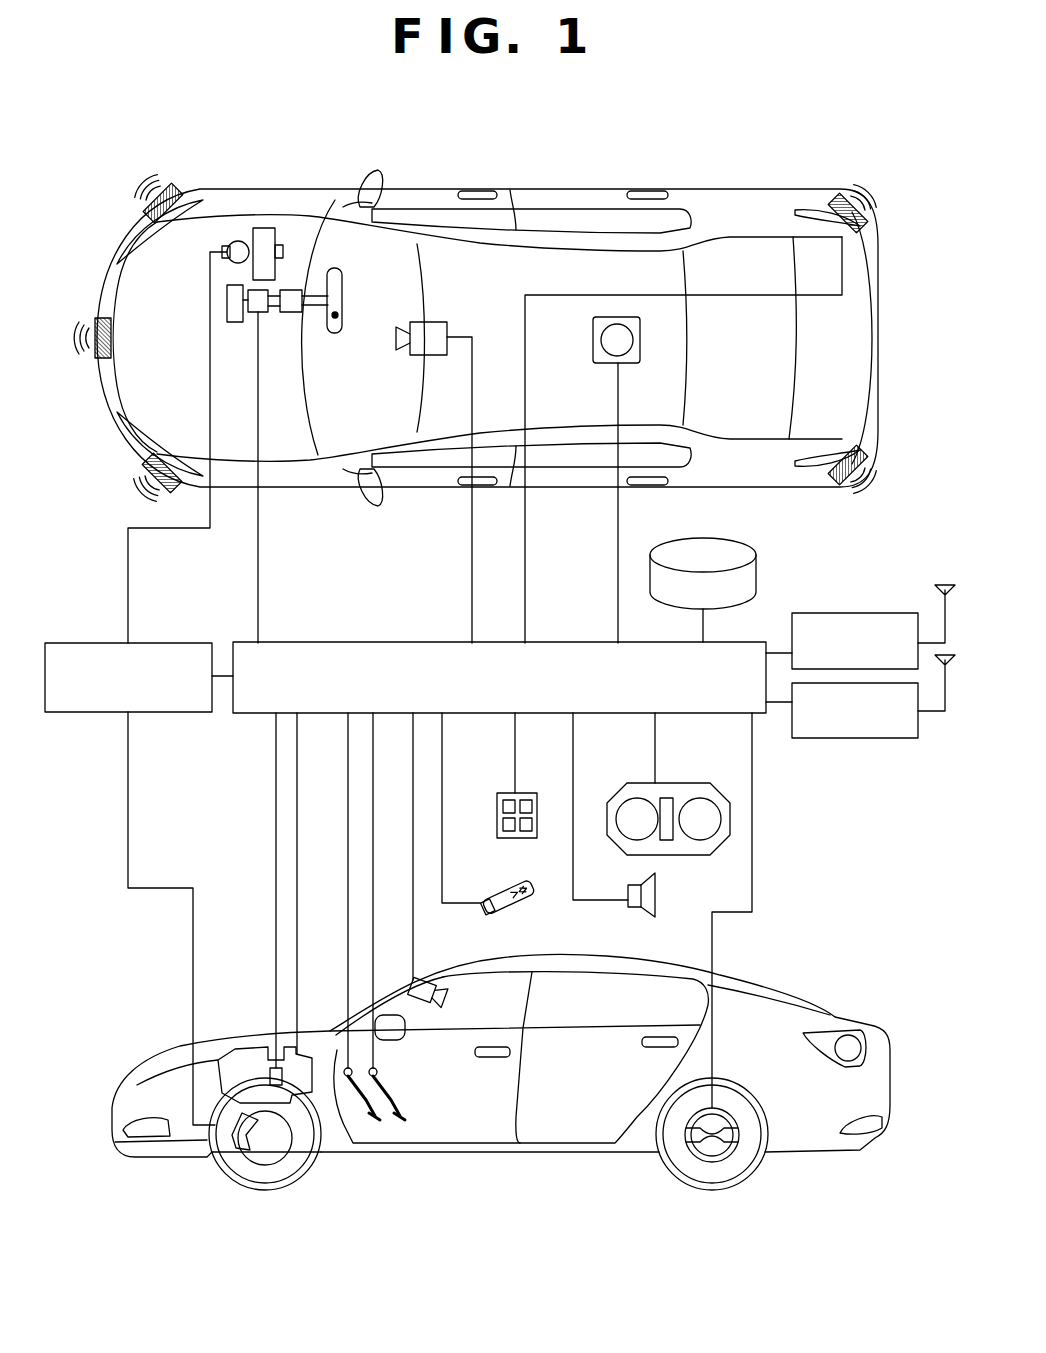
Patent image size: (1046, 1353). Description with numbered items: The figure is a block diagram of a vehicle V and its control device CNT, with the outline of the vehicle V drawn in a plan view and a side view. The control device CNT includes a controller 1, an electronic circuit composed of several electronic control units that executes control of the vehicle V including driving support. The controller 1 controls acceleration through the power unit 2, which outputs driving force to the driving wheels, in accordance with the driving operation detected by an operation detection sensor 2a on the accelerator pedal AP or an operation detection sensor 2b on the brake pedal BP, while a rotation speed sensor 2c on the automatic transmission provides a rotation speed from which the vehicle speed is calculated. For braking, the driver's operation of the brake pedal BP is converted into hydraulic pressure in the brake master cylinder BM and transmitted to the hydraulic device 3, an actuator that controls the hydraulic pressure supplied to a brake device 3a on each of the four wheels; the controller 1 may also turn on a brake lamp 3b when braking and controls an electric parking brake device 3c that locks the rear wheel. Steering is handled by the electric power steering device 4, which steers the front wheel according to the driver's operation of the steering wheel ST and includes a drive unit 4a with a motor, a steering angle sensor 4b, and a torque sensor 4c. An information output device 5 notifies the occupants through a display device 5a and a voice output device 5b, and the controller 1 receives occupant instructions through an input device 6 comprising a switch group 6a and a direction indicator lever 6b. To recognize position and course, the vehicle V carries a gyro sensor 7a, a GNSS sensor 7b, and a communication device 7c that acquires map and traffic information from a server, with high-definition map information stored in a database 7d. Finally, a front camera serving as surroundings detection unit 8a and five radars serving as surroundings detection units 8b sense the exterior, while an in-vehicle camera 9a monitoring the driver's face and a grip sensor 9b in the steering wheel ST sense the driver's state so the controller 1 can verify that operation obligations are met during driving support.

The controller 1 is at (430, 642).
The power unit 2 is at (305, 1160).
The operation detection sensor 2a is at (343, 1066).
The operation detection sensor 2b is at (381, 1072).
The rotation speed sensor 2c is at (274, 1066).
The hydraulic device 3 is at (95, 643).
The brake device 3a is at (234, 1158).
The brake lamp 3b is at (848, 1035).
The electric parking brake device 3c is at (700, 1160).
The electric power steering device 4 is at (250, 398).
The drive unit 4a is at (270, 313).
The steering angle sensor 4b is at (227, 292).
The torque sensor 4c is at (292, 290).
The information output device 5 is at (653, 815).
The display device 5a is at (626, 800).
The voice output device 5b is at (628, 896).
The input device 6 is at (501, 814).
The switch group 6a is at (497, 806).
The direction indicator lever 6b is at (496, 896).
The gyro sensor 7a is at (603, 364).
The GNSS sensor 7b is at (845, 613).
The communication device 7c is at (898, 738).
The database 7d is at (757, 562).
The surroundings detection unit 8a is at (430, 322).
The surroundings detection unit 8b is at (175, 195).
The in-vehicle detection unit 9a is at (425, 984).
The in-vehicle detection unit 9b is at (340, 316).
The accelerator pedal AP is at (383, 1161).
The brake pedal BP is at (423, 1161).
The brake master cylinder BM is at (243, 243).
The steering wheel ST is at (343, 281).
The vehicle V is at (893, 245).
The control device CNT is at (500, 642).